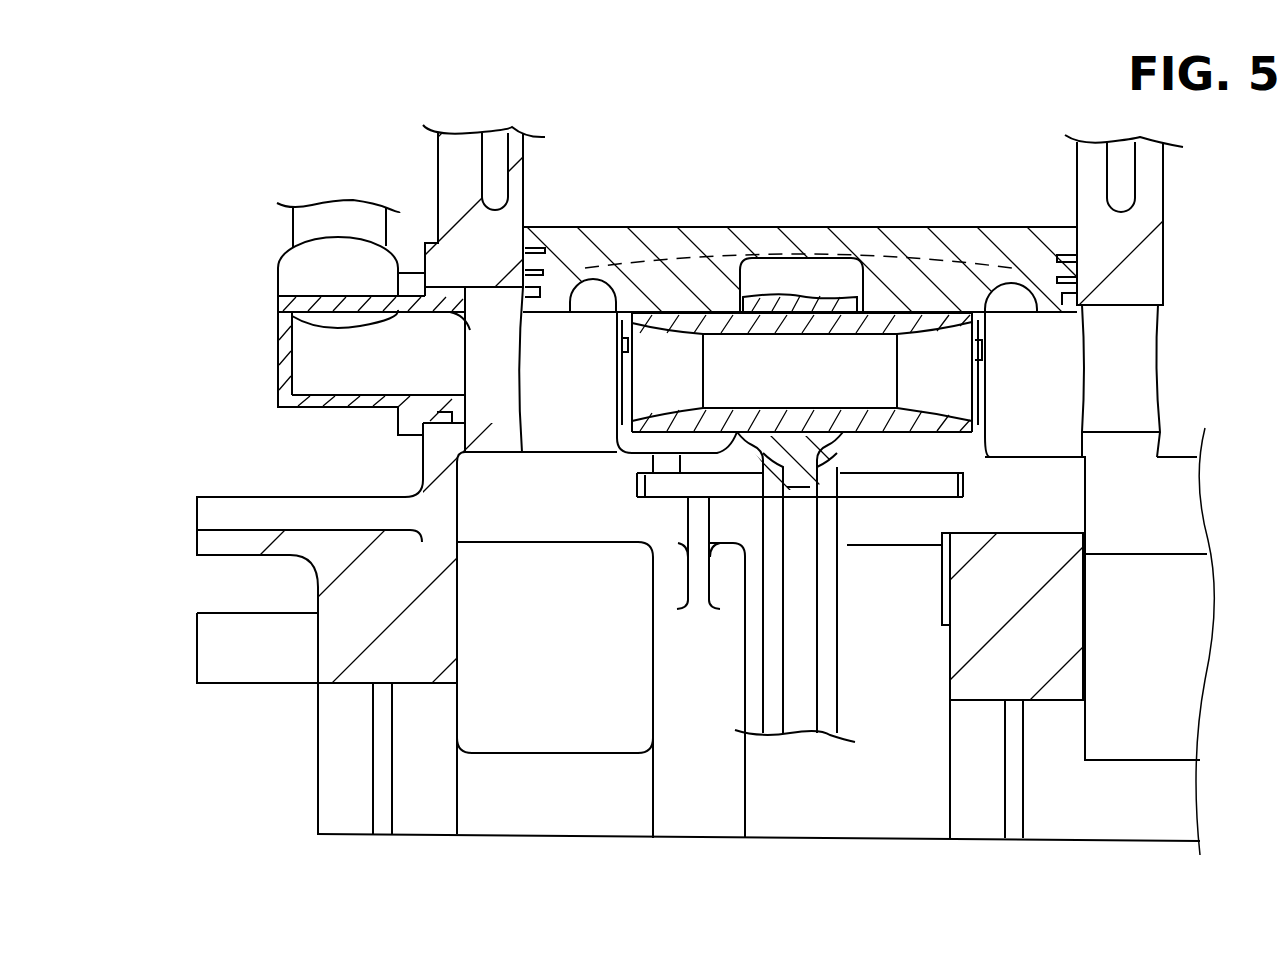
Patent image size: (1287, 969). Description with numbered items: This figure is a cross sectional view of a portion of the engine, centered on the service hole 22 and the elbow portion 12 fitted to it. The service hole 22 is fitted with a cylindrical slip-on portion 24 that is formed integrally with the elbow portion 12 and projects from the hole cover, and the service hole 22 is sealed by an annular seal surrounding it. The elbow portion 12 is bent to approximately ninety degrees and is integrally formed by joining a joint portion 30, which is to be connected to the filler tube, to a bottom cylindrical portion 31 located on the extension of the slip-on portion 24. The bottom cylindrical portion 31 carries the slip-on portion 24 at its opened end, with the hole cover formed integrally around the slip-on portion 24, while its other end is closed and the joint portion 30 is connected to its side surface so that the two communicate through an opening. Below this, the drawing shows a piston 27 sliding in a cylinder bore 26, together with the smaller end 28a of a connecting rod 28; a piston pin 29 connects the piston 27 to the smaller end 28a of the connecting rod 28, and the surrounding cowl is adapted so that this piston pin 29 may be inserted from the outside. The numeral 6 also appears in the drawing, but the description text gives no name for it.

The housing 6 is at (458, 145).
The elbow portion 12 is at (268, 244).
The service hole 22 is at (507, 372).
The slip-on portion 24 is at (472, 330).
The cylinder bore 26 is at (843, 130).
The piston 27 is at (892, 227).
The connecting rod 28 is at (798, 730).
The smaller end 28a is at (738, 257).
The piston pin 29 is at (950, 370).
The joint portion 30 is at (337, 205).
The bottom cylindrical portion 31 is at (277, 380).